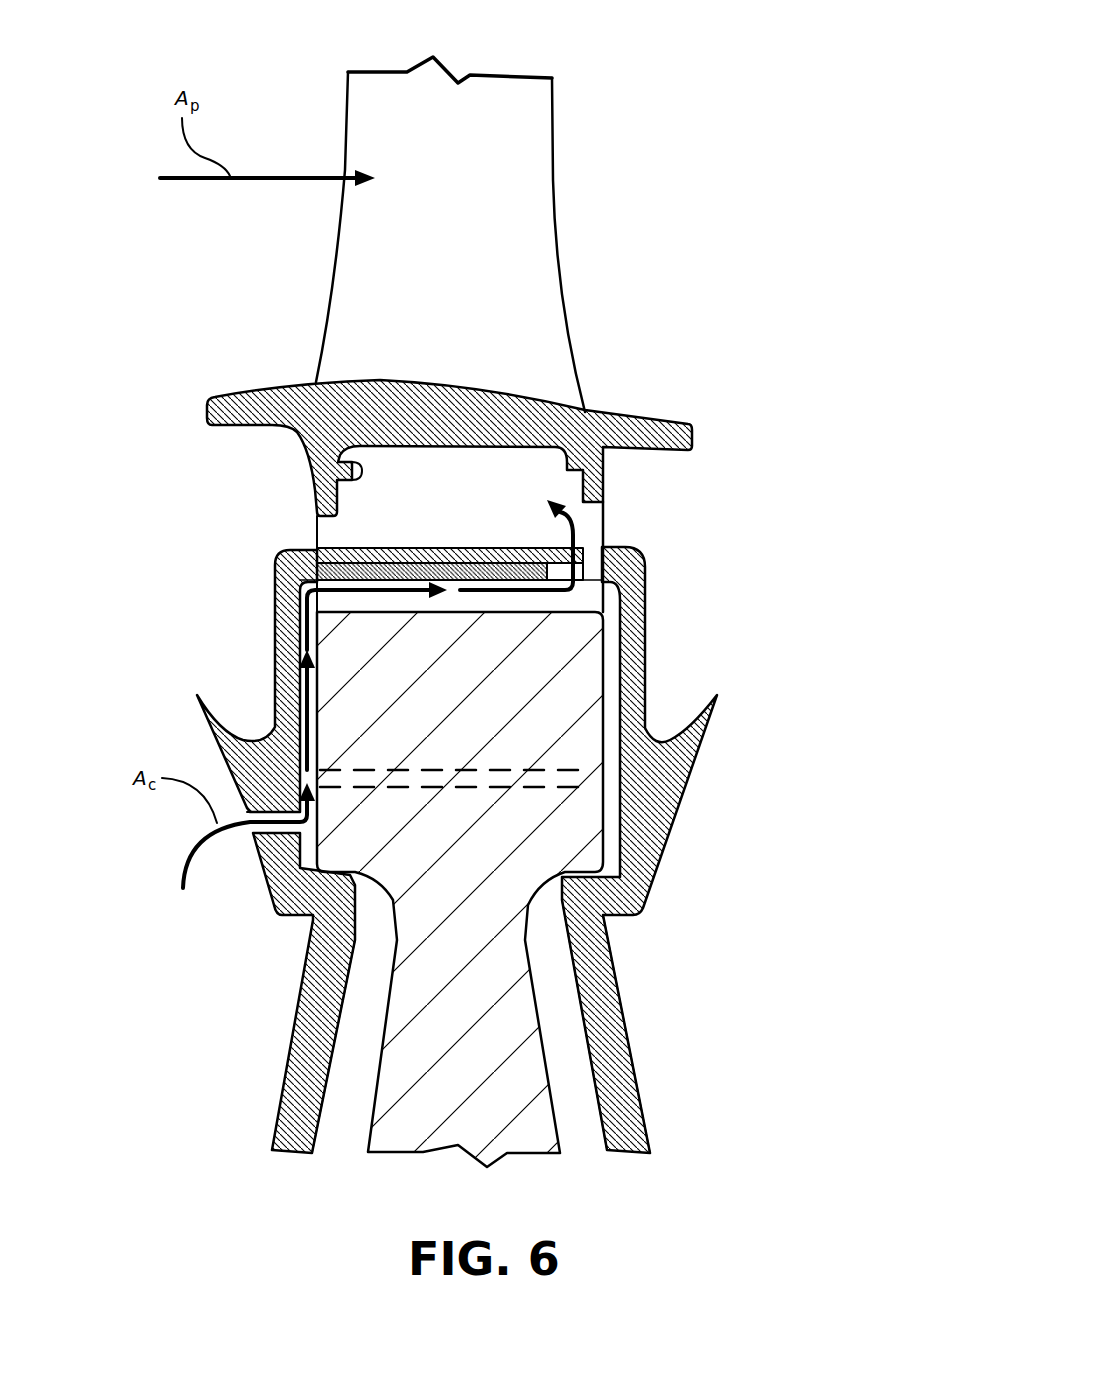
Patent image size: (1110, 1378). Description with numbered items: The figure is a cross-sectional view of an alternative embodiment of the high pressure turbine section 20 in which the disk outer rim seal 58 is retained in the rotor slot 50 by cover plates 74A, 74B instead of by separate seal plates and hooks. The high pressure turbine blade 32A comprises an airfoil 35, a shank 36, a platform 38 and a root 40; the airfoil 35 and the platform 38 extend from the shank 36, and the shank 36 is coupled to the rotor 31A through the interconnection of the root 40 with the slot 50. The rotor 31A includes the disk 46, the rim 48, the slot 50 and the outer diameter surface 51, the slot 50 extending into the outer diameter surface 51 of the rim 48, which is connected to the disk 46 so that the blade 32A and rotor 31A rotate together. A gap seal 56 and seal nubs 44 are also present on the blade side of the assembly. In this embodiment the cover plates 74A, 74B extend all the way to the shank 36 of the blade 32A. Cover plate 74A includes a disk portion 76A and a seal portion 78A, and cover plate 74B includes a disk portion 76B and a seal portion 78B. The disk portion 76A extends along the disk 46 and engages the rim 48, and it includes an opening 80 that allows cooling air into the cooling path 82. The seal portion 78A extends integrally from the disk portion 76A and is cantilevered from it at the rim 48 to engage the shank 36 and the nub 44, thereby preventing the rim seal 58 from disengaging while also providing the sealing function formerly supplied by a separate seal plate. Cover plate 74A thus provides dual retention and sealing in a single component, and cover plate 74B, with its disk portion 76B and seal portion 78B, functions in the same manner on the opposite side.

The high pressure turbine section 20 is at (690, 68).
The high pressure turbine blade 32A is at (645, 390).
The airfoil 35 is at (413, 277).
The platform 38 is at (272, 428).
The gap seal 56 is at (340, 487).
The shank 36 is at (459, 525).
The seal nub 44 is at (412, 553).
The rim seal 58 is at (378, 573).
The outer diameter surface 51 is at (600, 600).
The rim 48 is at (463, 758).
The rotor 31A is at (530, 1029).
The root 40 is at (390, 758).
The slot 50 is at (498, 787).
The seal portion 78A is at (297, 655).
The seal portion 78B is at (628, 635).
The cover plate 74A is at (285, 1068).
The cover plate 74B is at (604, 957).
The disk portion 76A is at (312, 1022).
The disk portion 76B is at (617, 1020).
The opening 80 is at (258, 828).
The cooling path 82 is at (290, 641).
The disk 46 is at (493, 1120).